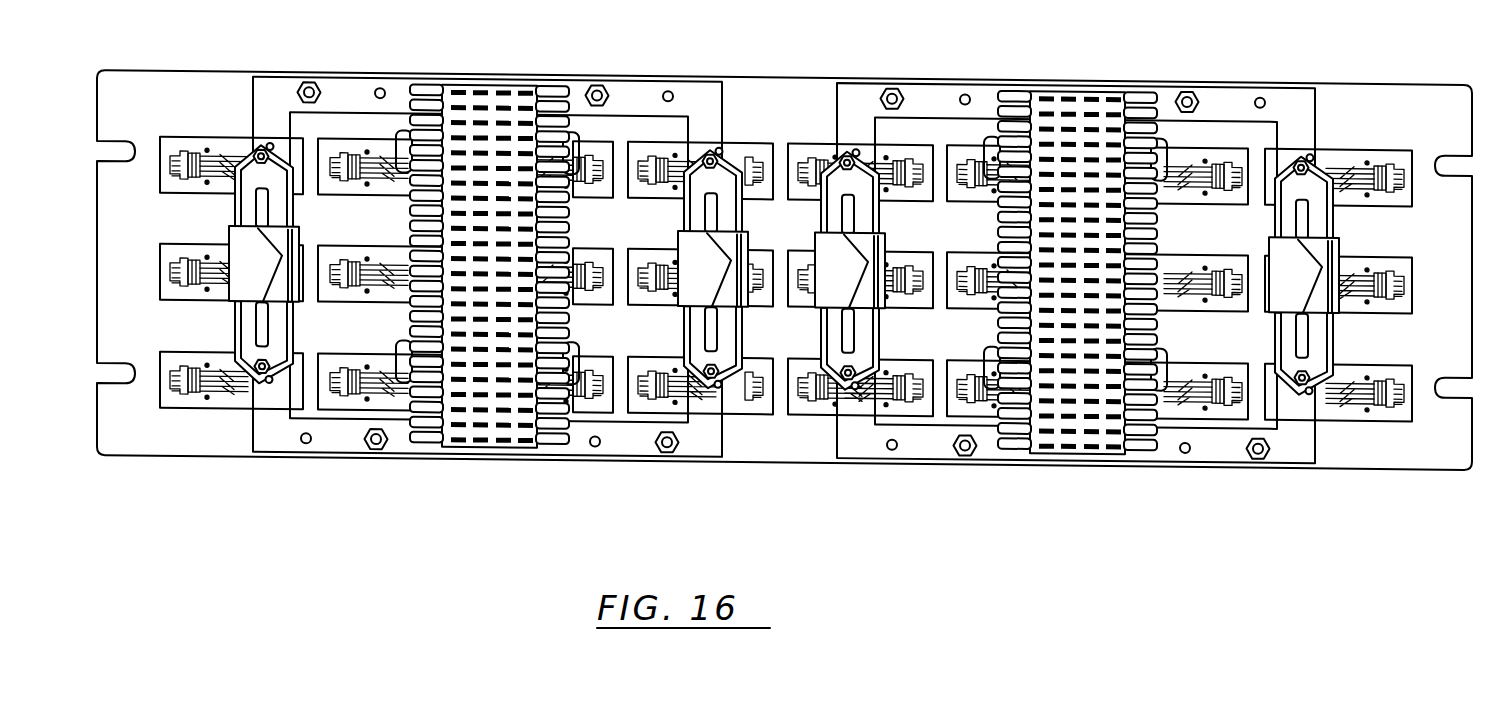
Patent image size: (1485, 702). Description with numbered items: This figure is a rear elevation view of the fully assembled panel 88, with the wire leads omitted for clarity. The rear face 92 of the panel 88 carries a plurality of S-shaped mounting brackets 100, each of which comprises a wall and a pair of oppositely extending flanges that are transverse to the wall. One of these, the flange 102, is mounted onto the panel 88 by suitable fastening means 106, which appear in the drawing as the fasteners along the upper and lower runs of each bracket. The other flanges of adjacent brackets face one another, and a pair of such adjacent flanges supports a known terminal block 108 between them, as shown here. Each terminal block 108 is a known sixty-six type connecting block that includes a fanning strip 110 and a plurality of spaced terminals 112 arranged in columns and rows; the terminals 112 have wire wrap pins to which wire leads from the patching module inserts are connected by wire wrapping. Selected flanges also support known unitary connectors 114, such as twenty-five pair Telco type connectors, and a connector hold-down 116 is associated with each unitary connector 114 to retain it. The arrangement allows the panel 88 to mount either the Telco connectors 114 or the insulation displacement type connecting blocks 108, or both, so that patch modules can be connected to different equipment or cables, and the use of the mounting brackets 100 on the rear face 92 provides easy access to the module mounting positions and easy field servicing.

The panel 88 is at (784, 261).
The rear face 92 is at (1345, 74).
The mounting bracket 100 is at (1166, 80).
The flange 102 is at (709, 82).
The fastening means 106 is at (604, 80).
The terminal block 108 is at (768, 242).
The fanning strip 110 is at (420, 79).
The terminals 112 is at (472, 84).
The unitary connector 114 is at (261, 152).
The connector hold-down 116 is at (228, 232).